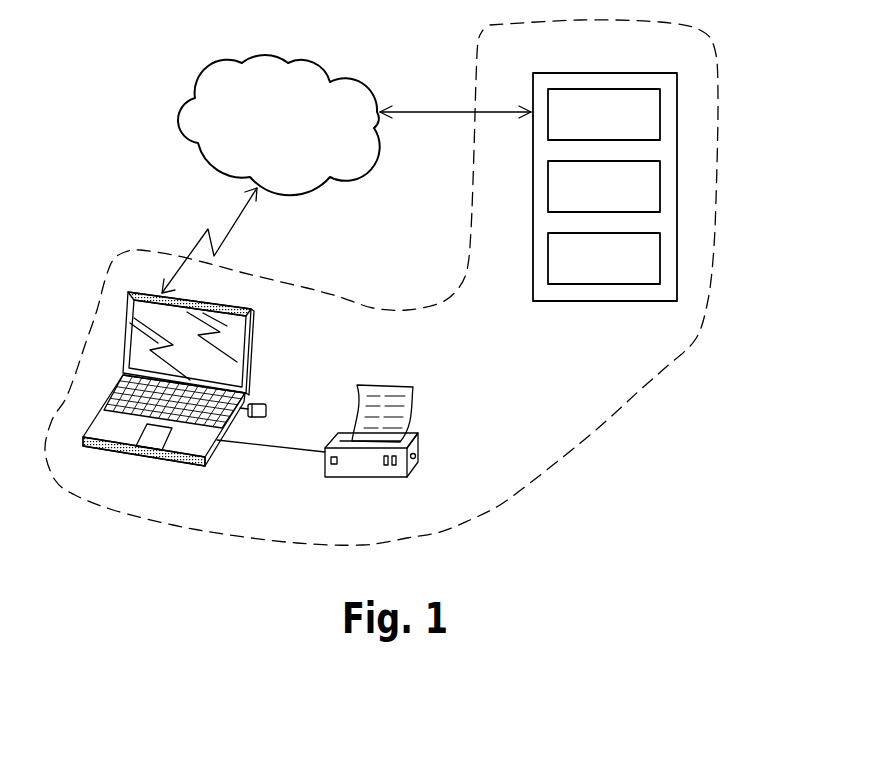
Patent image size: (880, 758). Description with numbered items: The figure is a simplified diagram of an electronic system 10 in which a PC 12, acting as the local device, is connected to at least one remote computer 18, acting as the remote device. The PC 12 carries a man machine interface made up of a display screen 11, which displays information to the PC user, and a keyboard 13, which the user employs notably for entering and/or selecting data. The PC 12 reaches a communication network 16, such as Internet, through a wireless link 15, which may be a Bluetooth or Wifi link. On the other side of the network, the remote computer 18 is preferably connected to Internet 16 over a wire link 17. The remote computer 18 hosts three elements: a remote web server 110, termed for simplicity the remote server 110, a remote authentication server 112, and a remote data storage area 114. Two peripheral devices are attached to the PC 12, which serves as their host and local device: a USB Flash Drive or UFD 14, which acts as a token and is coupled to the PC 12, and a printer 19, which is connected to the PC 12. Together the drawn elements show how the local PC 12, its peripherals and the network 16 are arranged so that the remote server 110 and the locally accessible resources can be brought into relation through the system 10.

The electronic system 10 is at (551, 486).
The display screen 11 is at (166, 379).
The PC 12 is at (252, 339).
The keyboard 13 is at (117, 380).
The USB Flash Drive 14 is at (268, 404).
The wireless link 15 is at (189, 246).
The communication network 16 is at (206, 76).
The wire link 17 is at (427, 110).
The remote computer 18 is at (533, 196).
The printer 19 is at (413, 451).
The remote web server 110 is at (660, 112).
The remote authentication server 112 is at (660, 176).
The remote storage area 114 is at (660, 265).